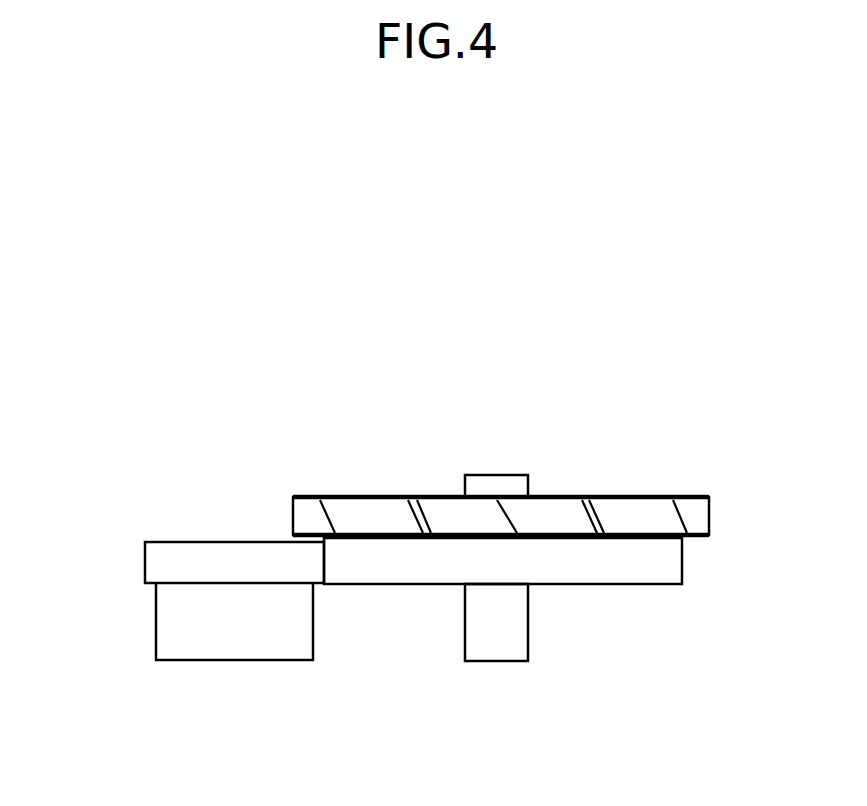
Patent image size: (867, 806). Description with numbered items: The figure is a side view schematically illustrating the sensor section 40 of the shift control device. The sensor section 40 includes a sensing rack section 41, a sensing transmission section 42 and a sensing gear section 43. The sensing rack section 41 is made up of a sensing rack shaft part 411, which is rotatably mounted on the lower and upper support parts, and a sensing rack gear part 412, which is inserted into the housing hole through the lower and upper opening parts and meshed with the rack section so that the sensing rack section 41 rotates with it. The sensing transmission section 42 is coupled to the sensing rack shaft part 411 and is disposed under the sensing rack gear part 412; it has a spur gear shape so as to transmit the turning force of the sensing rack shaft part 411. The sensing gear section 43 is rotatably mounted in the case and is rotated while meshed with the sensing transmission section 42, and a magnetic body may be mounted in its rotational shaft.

The sensor section 40 is at (701, 286).
The sensing rack section 41 is at (525, 615).
The sensing rack shaft part 411 is at (517, 622).
The sensing rack gear part 412 is at (700, 513).
The sensing transmission section 42 is at (392, 571).
The sensing gear section 43 is at (161, 566).